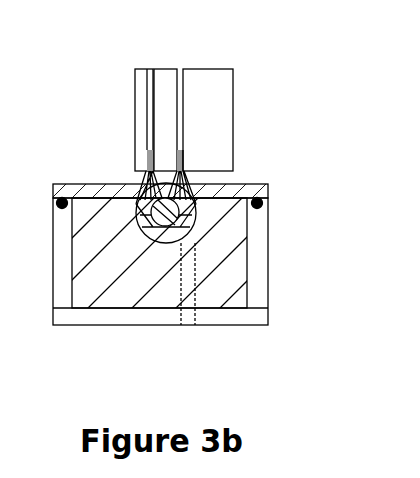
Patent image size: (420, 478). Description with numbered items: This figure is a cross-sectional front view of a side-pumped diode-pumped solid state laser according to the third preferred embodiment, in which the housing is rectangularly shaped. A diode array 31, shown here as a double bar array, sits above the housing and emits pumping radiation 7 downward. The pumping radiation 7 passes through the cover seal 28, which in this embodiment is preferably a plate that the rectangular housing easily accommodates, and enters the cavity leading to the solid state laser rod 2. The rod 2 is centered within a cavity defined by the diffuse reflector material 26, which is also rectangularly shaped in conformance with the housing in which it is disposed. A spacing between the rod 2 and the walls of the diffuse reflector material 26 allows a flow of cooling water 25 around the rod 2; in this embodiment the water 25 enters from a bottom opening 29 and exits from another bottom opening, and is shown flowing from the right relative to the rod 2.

The solid state laser rod 2 is at (197, 195).
The pumping radiation 7 is at (143, 185).
The cooling water 25 is at (183, 262).
The diffuse reflector material 26 is at (83, 203).
The cover seal plate 28 is at (117, 198).
The bottom opening 29 is at (188, 325).
The diode array 31 is at (146, 75).